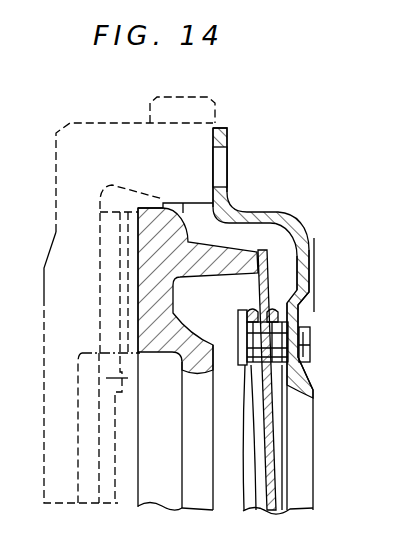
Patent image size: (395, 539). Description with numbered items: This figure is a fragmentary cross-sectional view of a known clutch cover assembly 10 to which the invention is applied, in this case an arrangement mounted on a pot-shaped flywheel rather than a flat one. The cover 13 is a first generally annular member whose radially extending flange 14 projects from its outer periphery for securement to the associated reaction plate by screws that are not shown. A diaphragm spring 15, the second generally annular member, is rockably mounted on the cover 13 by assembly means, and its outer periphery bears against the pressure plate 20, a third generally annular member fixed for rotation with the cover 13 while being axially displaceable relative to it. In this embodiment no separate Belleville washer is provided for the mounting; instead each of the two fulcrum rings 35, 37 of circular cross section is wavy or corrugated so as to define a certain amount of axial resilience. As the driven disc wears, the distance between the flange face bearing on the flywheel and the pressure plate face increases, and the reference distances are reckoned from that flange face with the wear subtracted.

The cover assembly 10 is at (296, 209).
The cover 13 is at (312, 238).
The radially extending flange 14 is at (229, 131).
The diaphragm spring 15 is at (262, 249).
The pressure plate 20 is at (164, 207).
The fulcrum ring 35 is at (276, 306).
The fulcrum ring 37 is at (250, 307).